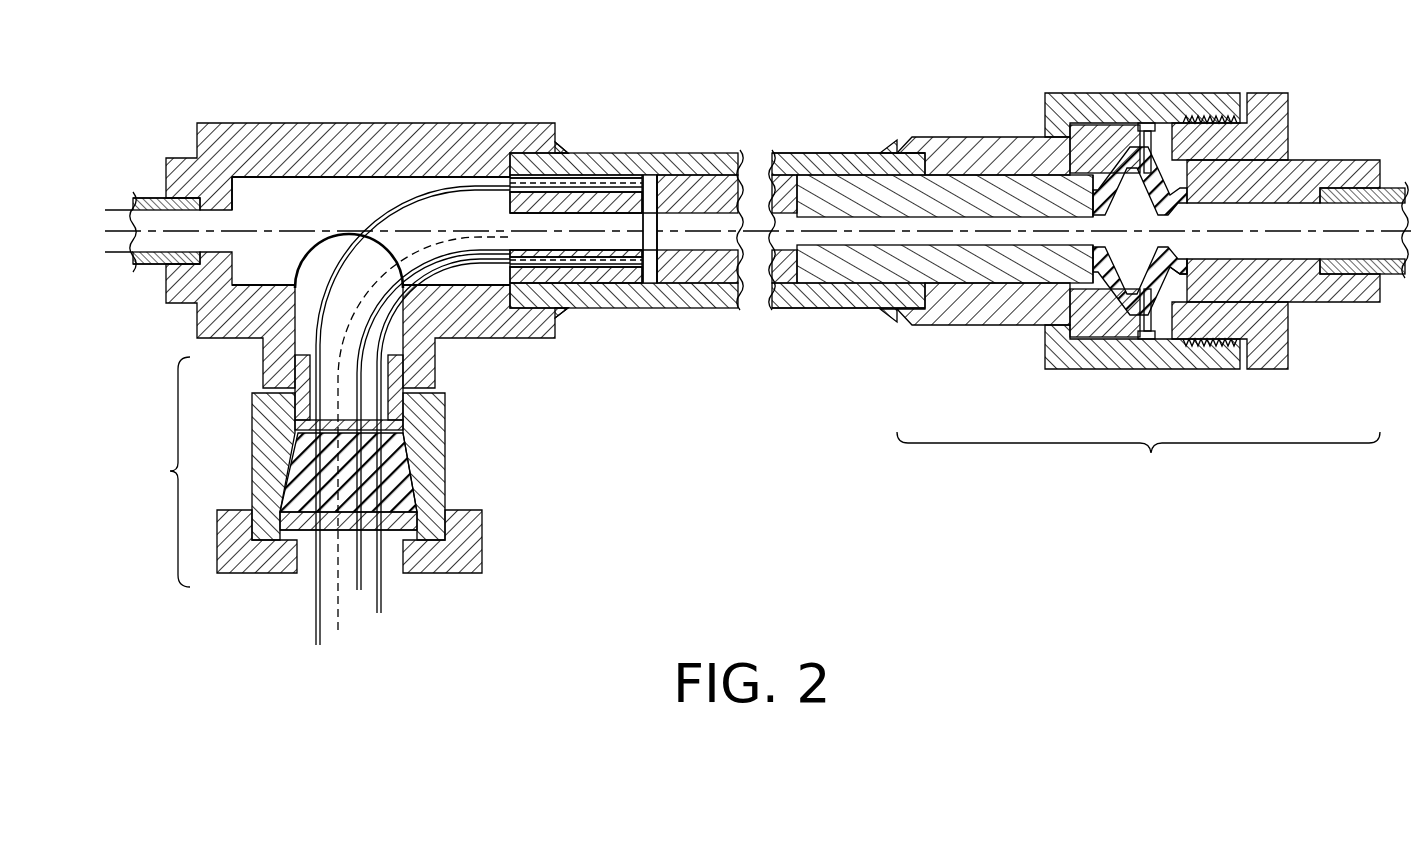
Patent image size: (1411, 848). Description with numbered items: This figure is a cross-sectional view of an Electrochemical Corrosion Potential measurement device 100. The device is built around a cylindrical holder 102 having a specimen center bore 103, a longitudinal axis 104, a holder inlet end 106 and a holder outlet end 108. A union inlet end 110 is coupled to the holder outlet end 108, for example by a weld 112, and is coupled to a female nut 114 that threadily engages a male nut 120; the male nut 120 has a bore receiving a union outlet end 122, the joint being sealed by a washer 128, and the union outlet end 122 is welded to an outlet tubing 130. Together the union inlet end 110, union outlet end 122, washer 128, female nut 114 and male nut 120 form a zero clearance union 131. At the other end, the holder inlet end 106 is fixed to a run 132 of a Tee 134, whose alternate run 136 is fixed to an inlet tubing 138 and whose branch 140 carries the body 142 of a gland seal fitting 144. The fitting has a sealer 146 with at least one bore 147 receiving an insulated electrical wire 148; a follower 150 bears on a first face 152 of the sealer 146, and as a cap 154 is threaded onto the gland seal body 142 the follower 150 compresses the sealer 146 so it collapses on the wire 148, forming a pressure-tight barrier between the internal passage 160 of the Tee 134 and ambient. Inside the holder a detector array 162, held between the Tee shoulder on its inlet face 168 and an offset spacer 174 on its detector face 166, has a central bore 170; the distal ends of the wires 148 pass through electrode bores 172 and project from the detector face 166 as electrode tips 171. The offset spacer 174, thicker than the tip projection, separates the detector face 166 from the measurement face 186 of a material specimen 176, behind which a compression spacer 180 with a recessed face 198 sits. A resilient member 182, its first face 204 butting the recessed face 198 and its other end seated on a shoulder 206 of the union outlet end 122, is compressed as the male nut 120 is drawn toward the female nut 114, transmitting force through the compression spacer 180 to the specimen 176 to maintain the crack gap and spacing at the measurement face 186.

The Electrochemical Corrosion Potential measurement device 100 is at (800, 558).
The cylindrical holder 102 is at (805, 153).
The specimen center bore 103 is at (693, 216).
The longitudinal axis 104 is at (268, 226).
The holder inlet end 106 is at (575, 150).
The holder outlet end 108 is at (862, 160).
The union inlet end 110 is at (990, 138).
The weld 112 is at (890, 150).
The female nut 114 is at (1110, 128).
The male nut 120 is at (1262, 98).
The union outlet end 122 is at (1307, 162).
The washer 128 is at (1147, 122).
The outlet tubing 130 is at (1400, 186).
The zero clearance union 131 is at (1151, 453).
The run 132 is at (525, 124).
The Tee 134 is at (285, 123).
The alternate run 136 is at (192, 160).
The inlet tubing 138 is at (142, 197).
The branch 140 is at (270, 348).
The gland seal body 142 is at (447, 475).
The gland seal fitting 144 is at (157, 472).
The sealer 146 is at (258, 487).
The bore 147 is at (300, 440).
The insulated electrical wire 148 is at (334, 268).
The follower 150 is at (312, 535).
The first face 152 is at (395, 537).
The cap 154 is at (237, 573).
The internal passage 160 is at (262, 182).
The detector array 162 is at (588, 290).
The detector face 166 is at (660, 252).
The inlet face 168 is at (509, 270).
The central bore 170 is at (509, 224).
The electrode tip 171 is at (644, 190).
The electrode bore 172 is at (573, 298).
The offset spacer 174 is at (655, 300).
The material specimen 176 is at (790, 182).
The compression spacer 180 is at (835, 270).
The resilient member 182 is at (1117, 280).
The measurement face 186 is at (646, 178).
The recessed face 198 is at (1073, 250).
The first face 204 is at (1062, 185).
The shoulder 206 is at (1183, 274).